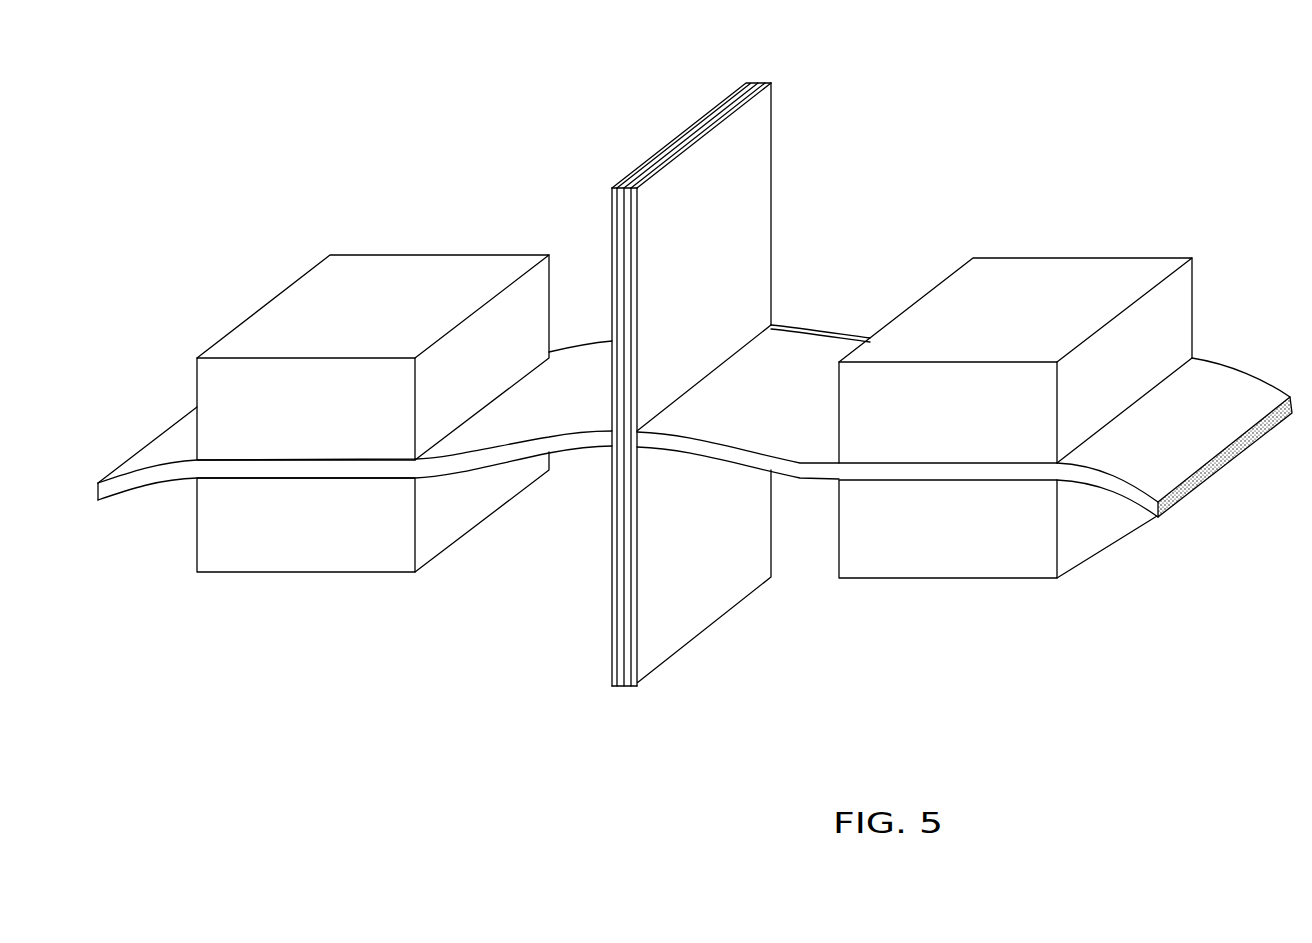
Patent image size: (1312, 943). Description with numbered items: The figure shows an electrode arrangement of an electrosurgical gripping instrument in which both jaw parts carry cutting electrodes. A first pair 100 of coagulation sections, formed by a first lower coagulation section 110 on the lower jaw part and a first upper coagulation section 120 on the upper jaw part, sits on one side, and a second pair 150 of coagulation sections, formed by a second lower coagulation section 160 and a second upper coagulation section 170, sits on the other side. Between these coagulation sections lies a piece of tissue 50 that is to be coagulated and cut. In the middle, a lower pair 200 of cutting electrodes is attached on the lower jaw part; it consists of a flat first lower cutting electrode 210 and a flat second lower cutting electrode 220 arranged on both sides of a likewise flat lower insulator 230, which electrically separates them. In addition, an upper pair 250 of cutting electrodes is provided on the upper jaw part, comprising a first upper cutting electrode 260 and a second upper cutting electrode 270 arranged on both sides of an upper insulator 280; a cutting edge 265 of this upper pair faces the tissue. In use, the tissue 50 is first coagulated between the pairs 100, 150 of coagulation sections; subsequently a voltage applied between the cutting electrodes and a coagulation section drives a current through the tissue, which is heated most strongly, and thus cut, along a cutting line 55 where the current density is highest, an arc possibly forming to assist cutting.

The tissue 50 is at (1245, 385).
The cutting line 55 is at (764, 344).
The first pair of coagulation sections 100 is at (373, 462).
The first lower coagulation section 110 is at (305, 562).
The first upper coagulation section 120 is at (410, 265).
The second pair of coagulation sections 150 is at (1015, 462).
The second lower coagulation section 160 is at (956, 562).
The second upper coagulation section 170 is at (1056, 265).
The lower pair of cutting electrodes 200 is at (686, 419).
The first lower cutting electrode 210 is at (612, 660).
The second lower cutting electrode 220 is at (699, 625).
The lower insulator 230 is at (625, 688).
The upper pair of cutting electrodes 250 is at (735, 348).
The first upper cutting electrode 260 is at (768, 148).
The cutting edge 265 is at (721, 358).
The second upper cutting electrode 270 is at (712, 105).
The upper insulator 280 is at (758, 80).